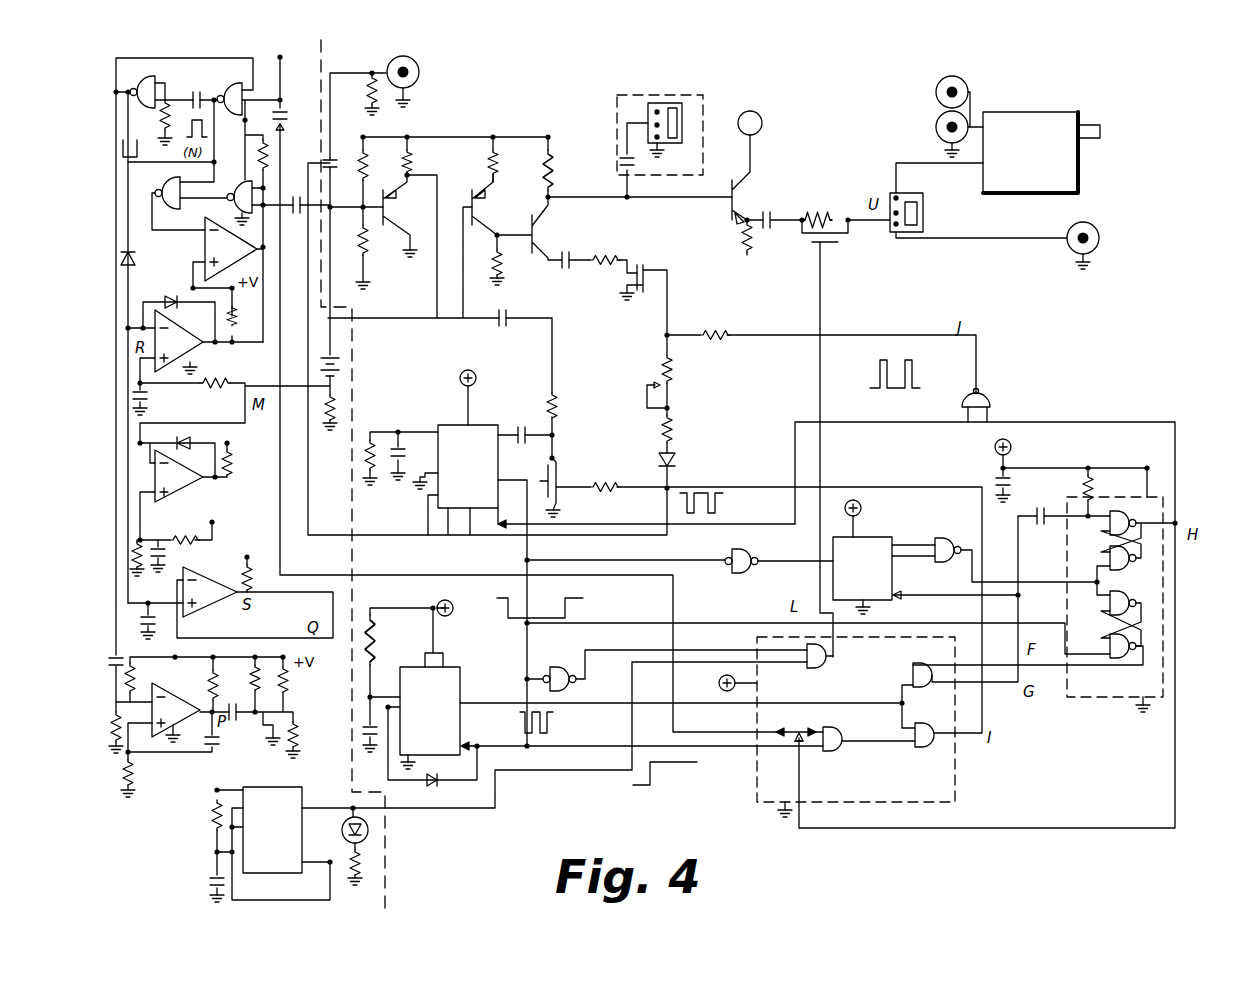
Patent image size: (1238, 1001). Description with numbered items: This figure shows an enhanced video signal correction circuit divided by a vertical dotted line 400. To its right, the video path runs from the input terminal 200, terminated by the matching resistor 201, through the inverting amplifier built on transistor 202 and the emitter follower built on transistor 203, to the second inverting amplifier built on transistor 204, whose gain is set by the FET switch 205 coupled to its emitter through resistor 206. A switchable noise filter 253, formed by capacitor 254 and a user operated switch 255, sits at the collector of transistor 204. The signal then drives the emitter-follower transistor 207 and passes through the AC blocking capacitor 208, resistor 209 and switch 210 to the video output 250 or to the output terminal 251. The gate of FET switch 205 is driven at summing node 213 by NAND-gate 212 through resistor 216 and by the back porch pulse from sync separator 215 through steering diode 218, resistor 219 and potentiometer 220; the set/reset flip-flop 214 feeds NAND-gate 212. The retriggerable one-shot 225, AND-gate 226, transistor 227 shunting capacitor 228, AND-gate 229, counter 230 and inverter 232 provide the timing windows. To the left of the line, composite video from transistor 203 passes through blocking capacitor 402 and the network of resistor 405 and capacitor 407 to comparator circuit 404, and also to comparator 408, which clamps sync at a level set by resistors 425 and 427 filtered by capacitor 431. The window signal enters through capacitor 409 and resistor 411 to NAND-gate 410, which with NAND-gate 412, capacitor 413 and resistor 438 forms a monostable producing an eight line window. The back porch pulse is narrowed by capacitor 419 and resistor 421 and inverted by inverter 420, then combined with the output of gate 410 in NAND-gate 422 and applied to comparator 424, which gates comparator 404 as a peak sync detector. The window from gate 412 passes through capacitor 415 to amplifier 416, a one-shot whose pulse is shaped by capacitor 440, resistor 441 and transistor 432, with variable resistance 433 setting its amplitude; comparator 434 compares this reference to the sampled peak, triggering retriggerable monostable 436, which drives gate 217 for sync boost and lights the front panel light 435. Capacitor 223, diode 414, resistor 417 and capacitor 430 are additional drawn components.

The input terminal 200 is at (420, 75).
The matching resistor 201 is at (368, 96).
The transistor 202 is at (478, 205).
The transistor 203 is at (388, 208).
The transistor 204 is at (556, 244).
The FET switch 205 is at (646, 272).
The resistor 206 is at (603, 258).
The transistor 207 is at (731, 188).
The AC blocking capacitor 208 is at (768, 210).
The resistor 209 is at (822, 212).
The switch 210 is at (1042, 165).
The NAND-gate 212 is at (985, 398).
The summing node 213 is at (670, 332).
The set/reset flip-flop 214 is at (1165, 586).
The sync separator 215 is at (482, 481).
The resistor 216 is at (718, 332).
The gate 217 is at (813, 670).
The steering diode 218 is at (678, 464).
The resistor 219 is at (672, 446).
The variable attenuation potentiometer 220 is at (672, 390).
The capacitor 223 is at (498, 326).
The retriggerable one-shot 225 is at (444, 731).
The AND-gate 226 is at (926, 752).
The transistor 227 is at (558, 465).
The capacitor 228 is at (546, 482).
The AND-gate 229 is at (908, 678).
The counter 230 is at (873, 577).
The inverter 232 is at (728, 555).
The video output 250 is at (1097, 226).
The output terminal 251 is at (1092, 126).
The switchable noise filter 253 is at (703, 97).
The capacitor 254 is at (620, 158).
The user operated switch 255 is at (664, 102).
The vertical dotted line 400 is at (388, 866).
The blocking capacitor 402 is at (340, 366).
The comparator circuit 404 is at (127, 328).
The resistor 405 is at (216, 380).
The capacitor 407 is at (133, 393).
The comparator 408 is at (150, 470).
The capacitor 409 is at (284, 118).
The NAND-gate 410 is at (237, 80).
The resistor 411 is at (281, 62).
The NAND-gate 412 is at (135, 86).
The capacitor 413 is at (194, 88).
The diode 414 is at (120, 258).
The capacitor 415 is at (112, 658).
The amplifier 416 is at (170, 701).
The resistor 417 is at (112, 706).
The capacitor 419 is at (297, 216).
The NAND-gate inverter 420 is at (250, 214).
The resistor 421 is at (265, 160).
The NAND-gate 422 is at (156, 180).
The comparator 424 is at (204, 248).
The resistor 425 is at (186, 538).
The resistor 427 is at (133, 540).
The capacitor 430 is at (138, 618).
The capacitor 431 is at (172, 550).
The transistor 432 is at (235, 722).
The variable resistance 433 is at (296, 728).
The comparator 434 is at (218, 604).
The front panel light 435 is at (372, 838).
The retriggerable monostable 436 is at (282, 845).
The resistor 438 is at (164, 115).
The capacitor 440 is at (220, 745).
The resistor 441 is at (253, 676).